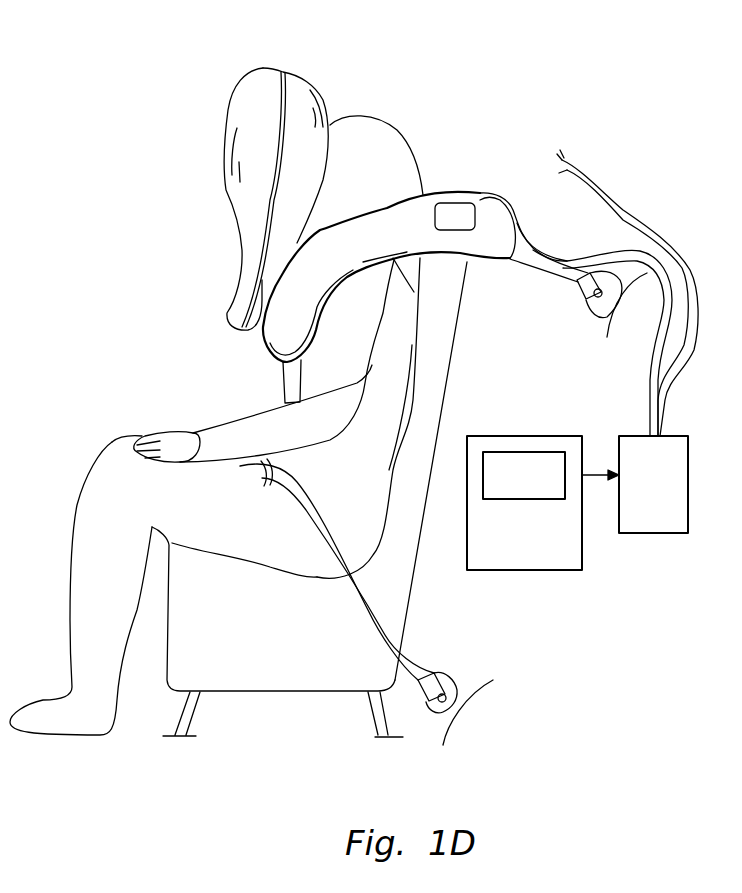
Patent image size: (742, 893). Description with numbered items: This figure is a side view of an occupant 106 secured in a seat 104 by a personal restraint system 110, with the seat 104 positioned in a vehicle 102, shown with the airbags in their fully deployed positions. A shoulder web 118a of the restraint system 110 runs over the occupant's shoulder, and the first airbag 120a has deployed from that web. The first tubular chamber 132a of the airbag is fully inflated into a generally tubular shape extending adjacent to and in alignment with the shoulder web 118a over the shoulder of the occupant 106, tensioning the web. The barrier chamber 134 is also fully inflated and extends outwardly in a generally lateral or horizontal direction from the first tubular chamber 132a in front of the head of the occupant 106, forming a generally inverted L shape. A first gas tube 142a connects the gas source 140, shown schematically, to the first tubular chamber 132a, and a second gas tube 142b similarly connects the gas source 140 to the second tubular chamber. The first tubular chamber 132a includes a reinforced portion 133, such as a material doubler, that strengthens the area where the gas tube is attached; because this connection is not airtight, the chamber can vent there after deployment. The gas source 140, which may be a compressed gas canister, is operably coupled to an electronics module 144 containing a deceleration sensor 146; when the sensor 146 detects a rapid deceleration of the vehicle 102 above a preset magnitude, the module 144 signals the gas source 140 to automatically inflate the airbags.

The vehicle 102 is at (358, 443).
The seat 104 is at (267, 670).
The occupant 106 is at (80, 592).
The personal restraint system 110 is at (158, 155).
The first shoulder web 118a is at (525, 258).
The first airbag 120a is at (212, 337).
The first tubular chamber 132a is at (283, 357).
The reinforced portion 133 is at (450, 205).
The barrier chamber 134 is at (238, 198).
The gas source 140 is at (654, 534).
The first gas tube 142a is at (648, 260).
The second gas tube 142b is at (700, 282).
The electronics module 144 is at (520, 572).
The deceleration sensor 146 is at (527, 450).